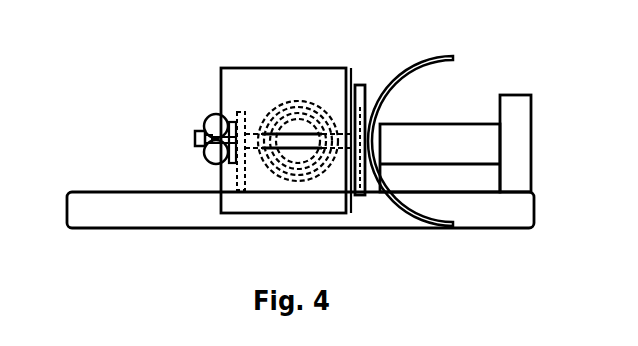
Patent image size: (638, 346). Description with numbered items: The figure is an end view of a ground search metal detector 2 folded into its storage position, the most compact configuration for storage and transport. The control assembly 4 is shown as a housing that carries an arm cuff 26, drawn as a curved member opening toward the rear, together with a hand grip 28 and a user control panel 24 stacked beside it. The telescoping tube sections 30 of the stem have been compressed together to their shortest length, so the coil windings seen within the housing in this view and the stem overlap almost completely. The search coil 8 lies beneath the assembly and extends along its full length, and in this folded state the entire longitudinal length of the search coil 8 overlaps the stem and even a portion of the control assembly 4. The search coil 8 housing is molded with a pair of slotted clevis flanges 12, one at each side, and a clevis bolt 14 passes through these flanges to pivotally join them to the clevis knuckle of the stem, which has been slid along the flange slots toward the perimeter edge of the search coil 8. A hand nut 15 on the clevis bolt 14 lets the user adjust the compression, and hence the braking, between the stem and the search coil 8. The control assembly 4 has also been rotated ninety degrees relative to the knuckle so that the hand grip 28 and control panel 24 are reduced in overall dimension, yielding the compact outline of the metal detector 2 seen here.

The ground search metal detector 2 is at (107, 93).
The control assembly 4 is at (257, 67).
The search coil 8 is at (67, 204).
The clevis flanges 12 is at (240, 111).
The clevis bolt 14 is at (254, 149).
The hand nut 15 is at (208, 162).
The user control panel 24 is at (531, 160).
The arm cuff 26 is at (413, 57).
The hand grip 28 is at (436, 123).
The telescoping tube sections 30 is at (290, 101).